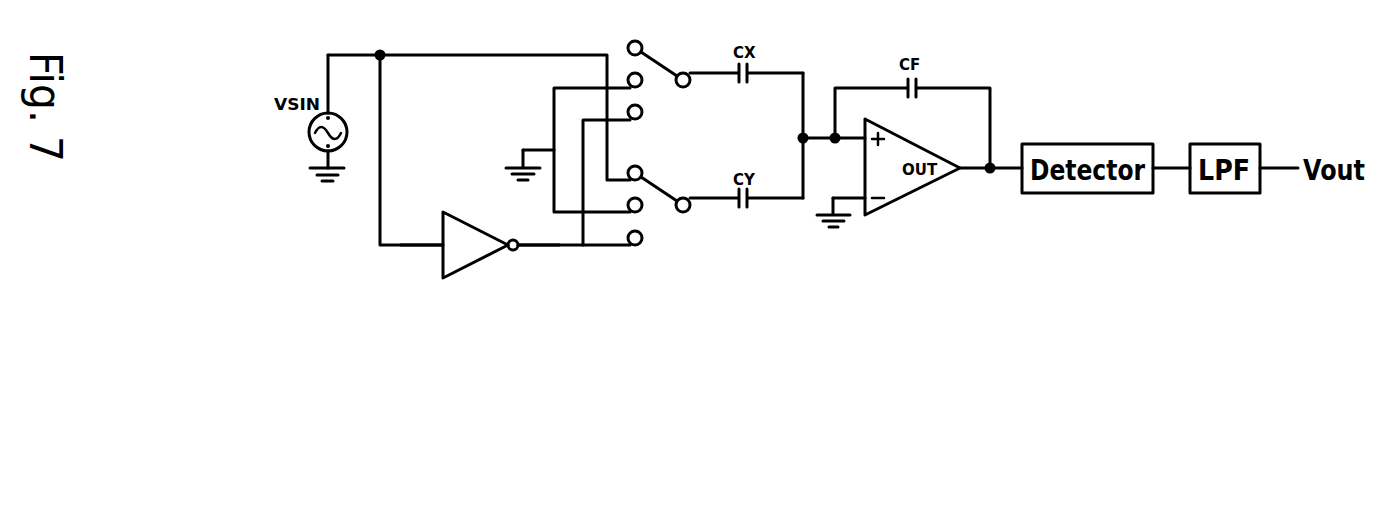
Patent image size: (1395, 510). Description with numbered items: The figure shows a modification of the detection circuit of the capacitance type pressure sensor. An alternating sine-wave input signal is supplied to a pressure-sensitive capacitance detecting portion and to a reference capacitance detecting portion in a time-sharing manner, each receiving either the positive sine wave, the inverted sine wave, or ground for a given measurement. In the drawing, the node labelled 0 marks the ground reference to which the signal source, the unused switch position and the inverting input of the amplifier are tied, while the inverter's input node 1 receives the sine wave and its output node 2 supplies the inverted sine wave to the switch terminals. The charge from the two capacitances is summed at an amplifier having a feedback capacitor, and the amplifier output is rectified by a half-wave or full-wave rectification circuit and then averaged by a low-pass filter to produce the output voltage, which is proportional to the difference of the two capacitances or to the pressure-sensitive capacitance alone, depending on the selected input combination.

The ground node 0 is at (582, 196).
The inverter input node 1 is at (421, 234).
The inverter output node 2 is at (539, 234).